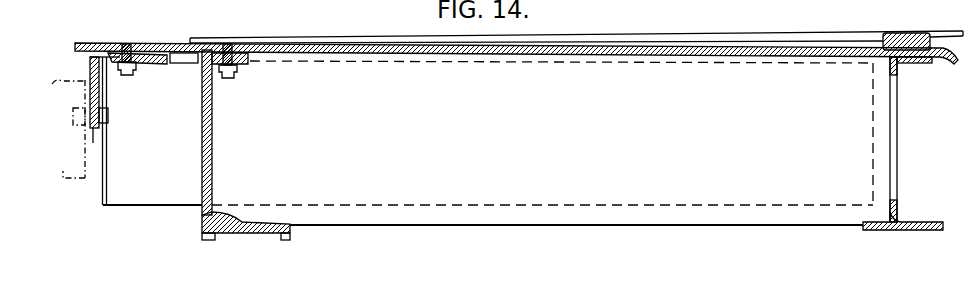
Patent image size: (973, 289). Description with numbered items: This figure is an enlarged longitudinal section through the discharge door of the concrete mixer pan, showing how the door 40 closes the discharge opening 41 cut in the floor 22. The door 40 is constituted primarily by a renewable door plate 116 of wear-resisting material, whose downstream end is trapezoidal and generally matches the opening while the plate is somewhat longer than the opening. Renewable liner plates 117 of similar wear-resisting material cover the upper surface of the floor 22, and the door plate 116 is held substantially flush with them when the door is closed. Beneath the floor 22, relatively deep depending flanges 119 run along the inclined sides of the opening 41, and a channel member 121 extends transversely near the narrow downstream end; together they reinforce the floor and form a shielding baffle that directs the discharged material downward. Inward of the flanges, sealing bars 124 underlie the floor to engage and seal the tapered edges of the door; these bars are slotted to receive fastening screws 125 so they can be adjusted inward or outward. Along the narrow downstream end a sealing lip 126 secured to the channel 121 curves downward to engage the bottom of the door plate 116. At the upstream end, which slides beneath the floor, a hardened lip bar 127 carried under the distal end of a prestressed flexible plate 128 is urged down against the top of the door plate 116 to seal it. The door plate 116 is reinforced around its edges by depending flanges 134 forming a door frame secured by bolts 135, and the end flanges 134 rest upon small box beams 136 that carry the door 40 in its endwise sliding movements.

The floor 22 is at (635, 31).
The door 40 is at (704, 43).
The discharge opening 41 is at (754, 39).
The renewable door plate 116 is at (769, 57).
The renewable liner plate 117 is at (86, 43).
The depending flange 119 is at (169, 195).
The channel member 121 is at (61, 116).
The sealing bar 124 is at (296, 53).
The fastening screw 125 is at (124, 43).
The sealing lip 126 is at (146, 53).
The hardened lip bar 127 is at (880, 46).
The flexible plate 128 is at (914, 33).
The depending flange 134 is at (212, 140).
The bolt 135 is at (234, 67).
The box beam 136 is at (294, 225).